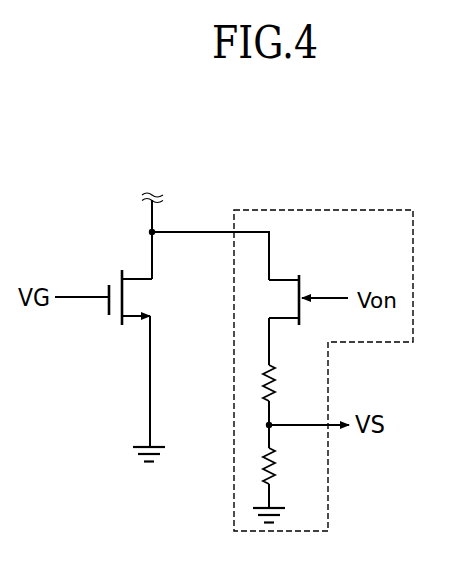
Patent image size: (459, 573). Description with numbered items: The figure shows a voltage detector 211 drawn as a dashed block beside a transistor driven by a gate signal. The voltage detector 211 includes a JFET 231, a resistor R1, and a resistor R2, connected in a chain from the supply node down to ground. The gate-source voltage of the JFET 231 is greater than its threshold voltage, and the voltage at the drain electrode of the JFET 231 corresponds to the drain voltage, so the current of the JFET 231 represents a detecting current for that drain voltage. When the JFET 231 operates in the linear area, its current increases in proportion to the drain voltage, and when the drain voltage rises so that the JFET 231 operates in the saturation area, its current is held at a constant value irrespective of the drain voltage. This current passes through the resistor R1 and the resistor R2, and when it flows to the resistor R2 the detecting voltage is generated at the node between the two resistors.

The voltage detector 211 is at (323, 210).
The JFET 231 is at (285, 275).
The resistor R1 is at (283, 383).
The resistor R2 is at (283, 466).